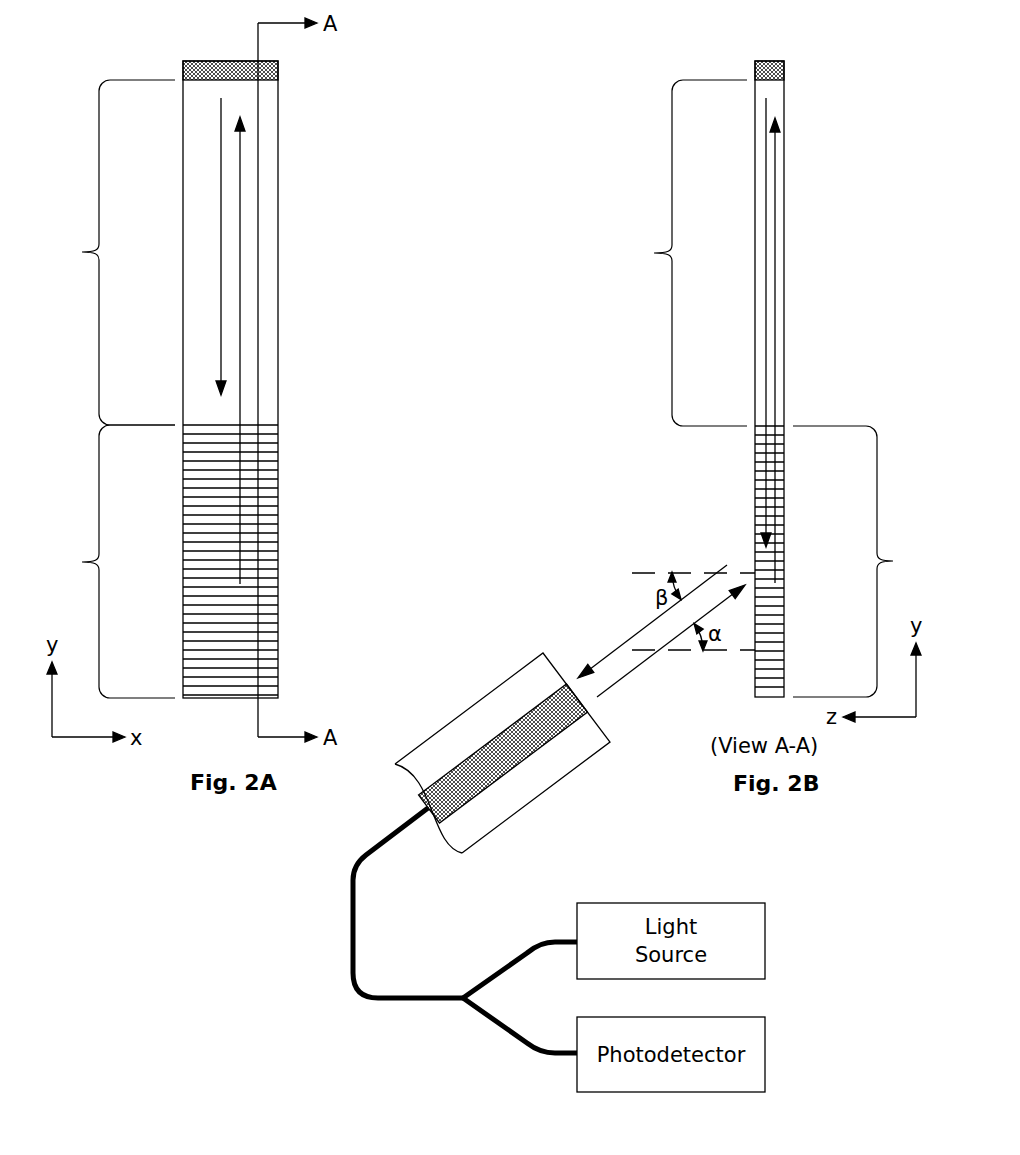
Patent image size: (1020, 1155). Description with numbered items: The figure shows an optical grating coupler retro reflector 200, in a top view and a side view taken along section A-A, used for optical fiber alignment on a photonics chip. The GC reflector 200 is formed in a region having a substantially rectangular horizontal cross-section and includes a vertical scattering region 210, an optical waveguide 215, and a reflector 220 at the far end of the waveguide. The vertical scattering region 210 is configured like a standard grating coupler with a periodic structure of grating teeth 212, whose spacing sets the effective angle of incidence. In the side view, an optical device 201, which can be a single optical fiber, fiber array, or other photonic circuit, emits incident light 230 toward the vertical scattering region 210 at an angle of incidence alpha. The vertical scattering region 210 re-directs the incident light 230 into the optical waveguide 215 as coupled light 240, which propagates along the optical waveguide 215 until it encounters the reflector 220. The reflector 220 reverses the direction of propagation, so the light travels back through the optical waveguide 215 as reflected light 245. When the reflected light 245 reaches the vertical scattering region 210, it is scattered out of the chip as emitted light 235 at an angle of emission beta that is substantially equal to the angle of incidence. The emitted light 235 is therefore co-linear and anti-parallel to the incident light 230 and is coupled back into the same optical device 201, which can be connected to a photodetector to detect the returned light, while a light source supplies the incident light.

In FIG. 2A, the optical grating coupler retro reflector 200 is at (278, 172).
In FIG. 2B, the optical grating coupler retro reflector 200 is at (784, 97).
In FIG. 2B, the optical device 201 is at (503, 698).
In FIG. 2A, the vertical scattering region 210 is at (102, 561).
In FIG. 2B, the vertical scattering region 210 is at (870, 561).
In FIG. 2A, the grating teeth 212 is at (203, 519).
In FIG. 2B, the grating teeth 212 is at (775, 632).
In FIG. 2A, the optical waveguide 215 is at (102, 252).
In FIG. 2B, the optical waveguide 215 is at (675, 253).
In FIG. 2A, the reflector 220 is at (202, 70).
In FIG. 2B, the reflector 220 is at (768, 70).
In FIG. 2B, the incident light 230 is at (643, 662).
In FIG. 2B, the emitted light 235 is at (632, 640).
In FIG. 2A, the coupled light 240 is at (241, 301).
In FIG. 2B, the coupled light 240 is at (775, 361).
In FIG. 2A, the reflected light 245 is at (221, 228).
In FIG. 2B, the reflected light 245 is at (766, 286).